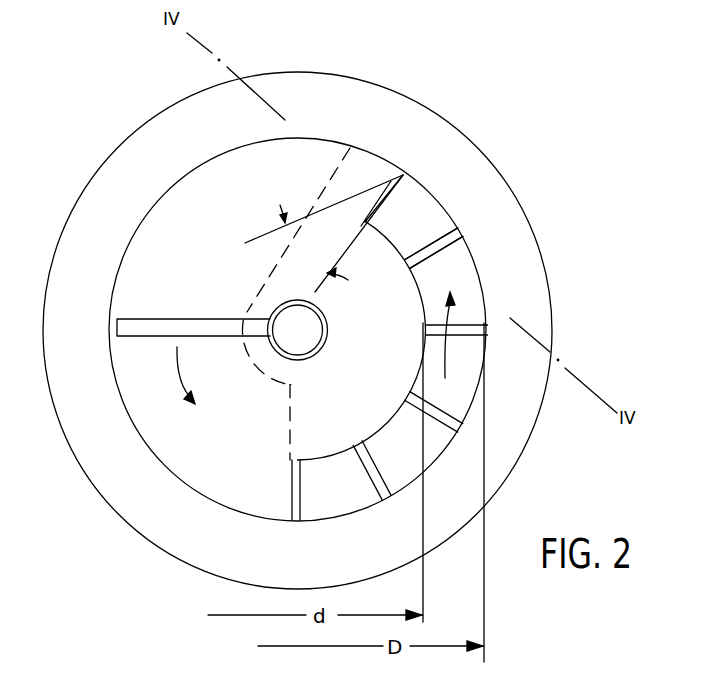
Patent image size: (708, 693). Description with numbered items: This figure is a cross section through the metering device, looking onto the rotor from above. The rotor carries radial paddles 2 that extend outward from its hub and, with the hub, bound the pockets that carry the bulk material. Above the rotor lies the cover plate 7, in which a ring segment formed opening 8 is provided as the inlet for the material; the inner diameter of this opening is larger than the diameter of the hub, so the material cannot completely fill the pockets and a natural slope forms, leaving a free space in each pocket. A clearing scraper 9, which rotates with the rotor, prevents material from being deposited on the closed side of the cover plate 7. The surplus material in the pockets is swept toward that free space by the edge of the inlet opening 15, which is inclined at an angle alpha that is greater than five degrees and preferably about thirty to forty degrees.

The radial paddles 2 is at (447, 423).
The cover plate 7 is at (365, 415).
The ring segment formed opening 8 is at (430, 215).
The clearing scraper 9 is at (161, 324).
The edge of the inlet opening 15 is at (346, 202).